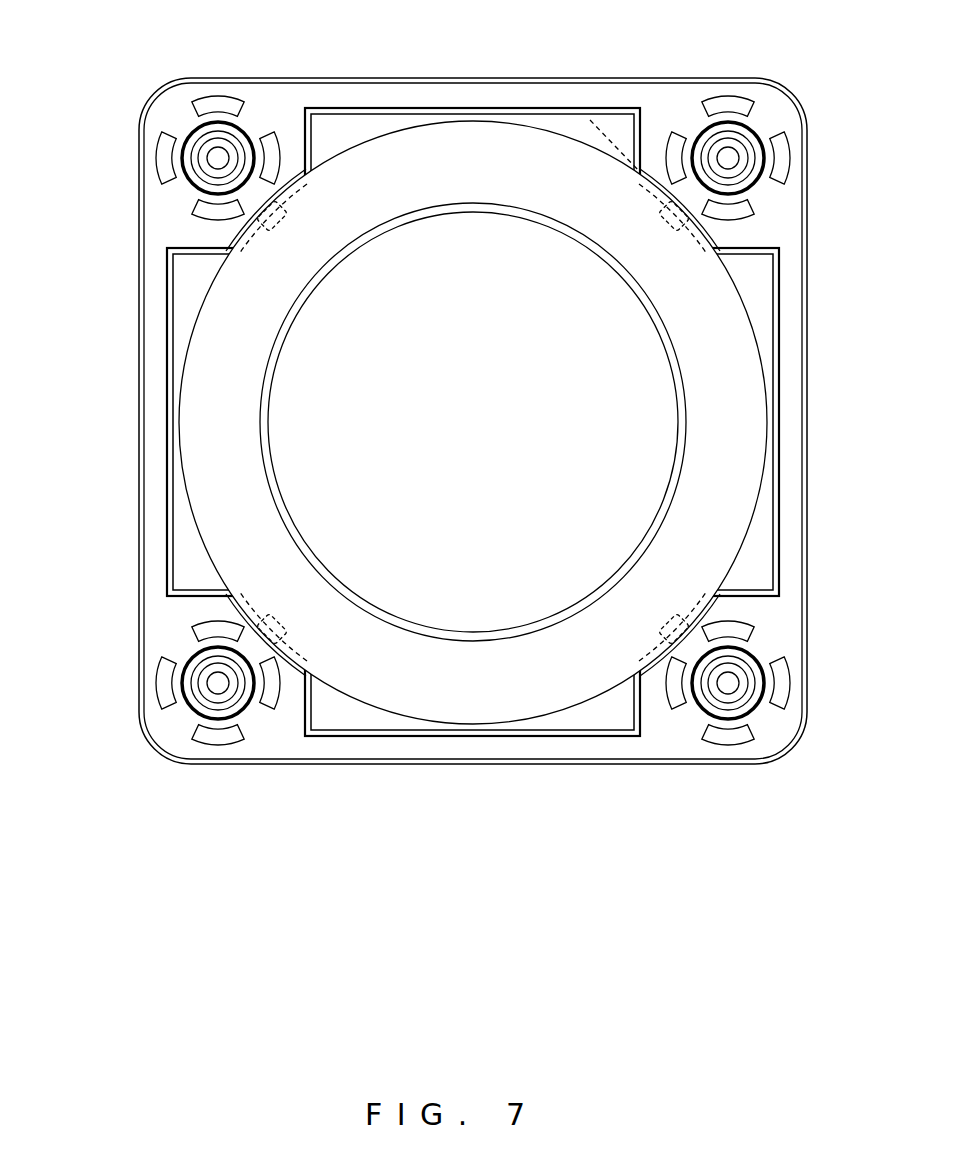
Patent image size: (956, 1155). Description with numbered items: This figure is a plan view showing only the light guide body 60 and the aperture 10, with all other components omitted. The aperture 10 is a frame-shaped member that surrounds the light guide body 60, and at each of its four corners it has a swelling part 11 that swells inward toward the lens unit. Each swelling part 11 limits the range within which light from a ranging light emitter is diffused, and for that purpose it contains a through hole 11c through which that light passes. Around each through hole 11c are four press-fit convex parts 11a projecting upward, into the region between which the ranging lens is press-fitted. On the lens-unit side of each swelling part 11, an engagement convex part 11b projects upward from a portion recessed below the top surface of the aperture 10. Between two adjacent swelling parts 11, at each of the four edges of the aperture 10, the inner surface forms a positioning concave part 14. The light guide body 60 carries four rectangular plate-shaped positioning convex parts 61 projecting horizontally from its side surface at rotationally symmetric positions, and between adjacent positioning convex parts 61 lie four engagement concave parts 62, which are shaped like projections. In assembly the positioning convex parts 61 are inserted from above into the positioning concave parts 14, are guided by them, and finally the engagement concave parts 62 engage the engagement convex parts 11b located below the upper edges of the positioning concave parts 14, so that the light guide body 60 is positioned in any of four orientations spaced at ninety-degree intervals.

The aperture 10 is at (450, 772).
The swelling part 11 is at (637, 113).
The press-fit convex part 11a is at (220, 101).
The engagement convex part 11b is at (655, 190).
The through hole 11c is at (243, 133).
The positioning concave part 14 is at (466, 117).
The light guide body 60 is at (354, 100).
The positioning convex part 61 is at (384, 122).
The engagement concave part 62 is at (390, 430).